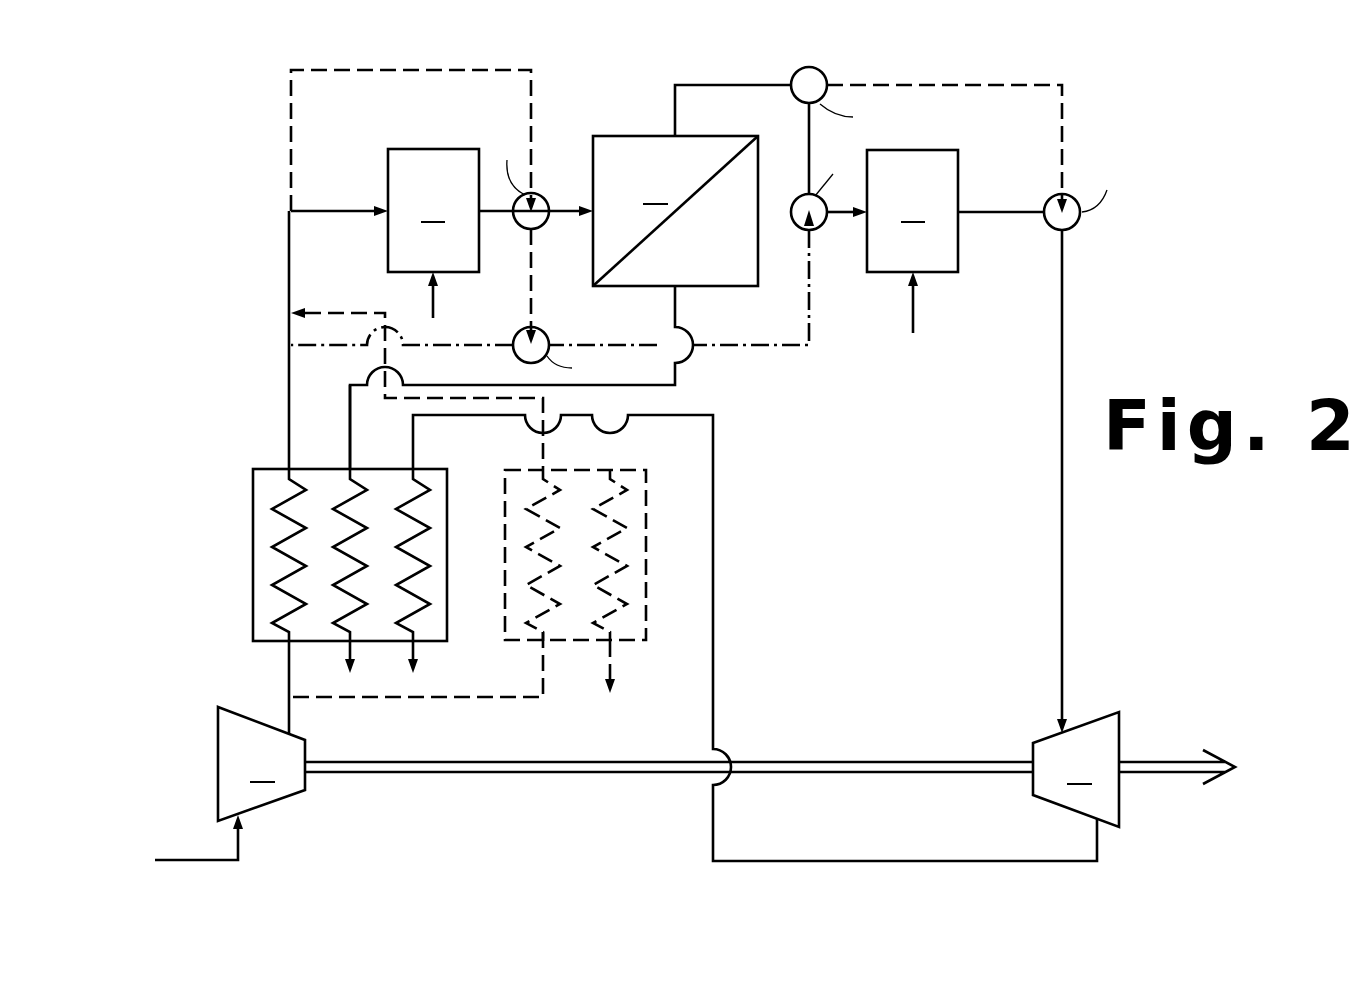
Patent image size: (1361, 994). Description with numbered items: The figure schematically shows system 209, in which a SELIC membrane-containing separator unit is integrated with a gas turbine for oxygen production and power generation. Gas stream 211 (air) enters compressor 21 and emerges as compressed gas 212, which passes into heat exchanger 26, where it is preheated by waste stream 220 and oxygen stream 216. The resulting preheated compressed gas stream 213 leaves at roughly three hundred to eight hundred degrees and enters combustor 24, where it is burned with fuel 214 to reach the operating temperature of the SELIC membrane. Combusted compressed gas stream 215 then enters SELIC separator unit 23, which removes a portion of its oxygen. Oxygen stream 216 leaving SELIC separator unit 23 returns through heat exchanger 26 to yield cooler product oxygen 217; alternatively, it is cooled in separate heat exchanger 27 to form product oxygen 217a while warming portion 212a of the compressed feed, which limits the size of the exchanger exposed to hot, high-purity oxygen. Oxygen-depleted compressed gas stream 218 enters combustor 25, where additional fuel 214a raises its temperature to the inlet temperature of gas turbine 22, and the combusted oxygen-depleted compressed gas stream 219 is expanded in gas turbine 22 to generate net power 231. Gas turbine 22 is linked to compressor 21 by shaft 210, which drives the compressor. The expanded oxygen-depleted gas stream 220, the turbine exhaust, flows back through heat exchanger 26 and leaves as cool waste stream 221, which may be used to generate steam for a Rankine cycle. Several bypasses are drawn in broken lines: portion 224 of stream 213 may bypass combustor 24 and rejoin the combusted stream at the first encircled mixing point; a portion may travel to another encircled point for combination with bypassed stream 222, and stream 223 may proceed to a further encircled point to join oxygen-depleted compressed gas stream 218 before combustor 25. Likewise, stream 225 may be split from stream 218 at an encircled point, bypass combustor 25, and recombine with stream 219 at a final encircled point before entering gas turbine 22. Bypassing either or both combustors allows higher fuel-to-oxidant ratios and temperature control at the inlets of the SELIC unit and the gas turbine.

The system 209 is at (1022, 62).
The compressor 21 is at (261, 764).
The gas turbine 22 is at (1076, 769).
The SELIC separator unit 23 is at (675, 211).
The combustor 24 is at (385, 210).
The combustor 25 is at (892, 211).
The heat exchanger 26 is at (252, 592).
The separate heat exchanger 27 is at (648, 545).
The shaft 210 is at (490, 773).
The gas stream 211 is at (242, 845).
The compressed gas 212 is at (287, 684).
The portion of compressed feed stream 212a is at (335, 312).
The preheated compressed gas stream 213 is at (289, 405).
The fuel 214 is at (437, 303).
The additional fuel 214a is at (922, 308).
The combusted compressed gas stream 215 is at (565, 208).
The oxygen stream 216 is at (676, 308).
The product oxygen 217 is at (343, 651).
The product oxygen 217a is at (614, 650).
The oxygen-depleted compressed gas stream 218 is at (762, 84).
The combusted oxygen-depleted compressed gas stream 219 is at (990, 212).
The expanded oxygen-depleted gas stream 220 is at (1057, 861).
The waste stream 221 is at (420, 650).
The bypassed stream 222 is at (323, 347).
The stream 223 is at (725, 347).
The portion of stream 224 is at (338, 70).
The stream 225 is at (908, 84).
The net power 231 is at (1170, 762).